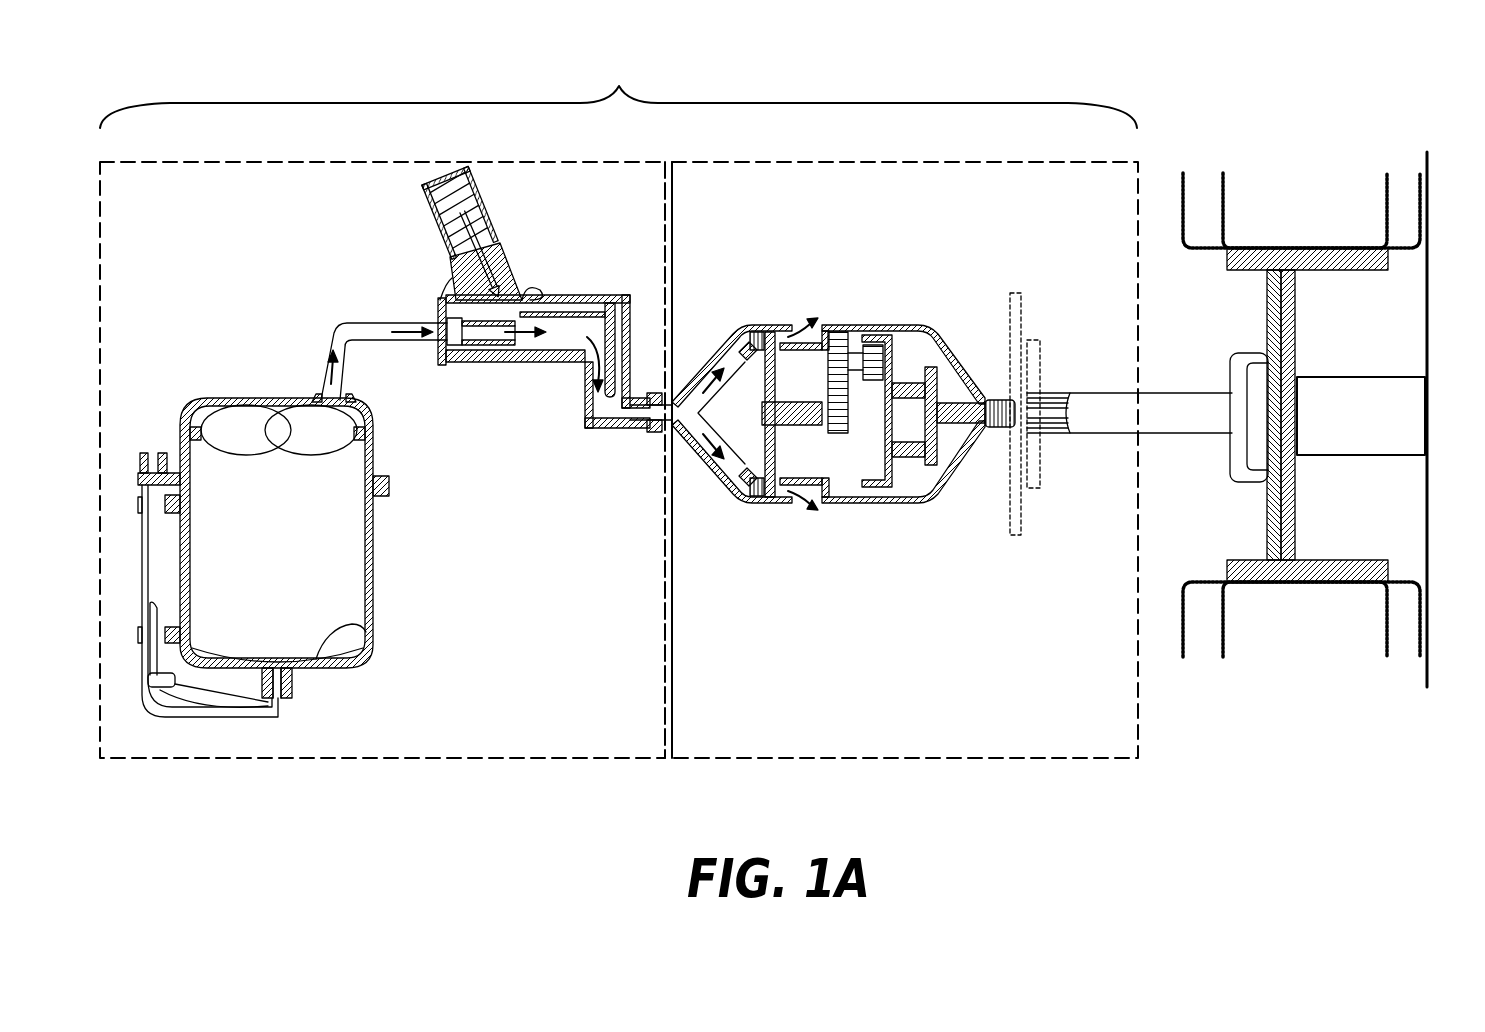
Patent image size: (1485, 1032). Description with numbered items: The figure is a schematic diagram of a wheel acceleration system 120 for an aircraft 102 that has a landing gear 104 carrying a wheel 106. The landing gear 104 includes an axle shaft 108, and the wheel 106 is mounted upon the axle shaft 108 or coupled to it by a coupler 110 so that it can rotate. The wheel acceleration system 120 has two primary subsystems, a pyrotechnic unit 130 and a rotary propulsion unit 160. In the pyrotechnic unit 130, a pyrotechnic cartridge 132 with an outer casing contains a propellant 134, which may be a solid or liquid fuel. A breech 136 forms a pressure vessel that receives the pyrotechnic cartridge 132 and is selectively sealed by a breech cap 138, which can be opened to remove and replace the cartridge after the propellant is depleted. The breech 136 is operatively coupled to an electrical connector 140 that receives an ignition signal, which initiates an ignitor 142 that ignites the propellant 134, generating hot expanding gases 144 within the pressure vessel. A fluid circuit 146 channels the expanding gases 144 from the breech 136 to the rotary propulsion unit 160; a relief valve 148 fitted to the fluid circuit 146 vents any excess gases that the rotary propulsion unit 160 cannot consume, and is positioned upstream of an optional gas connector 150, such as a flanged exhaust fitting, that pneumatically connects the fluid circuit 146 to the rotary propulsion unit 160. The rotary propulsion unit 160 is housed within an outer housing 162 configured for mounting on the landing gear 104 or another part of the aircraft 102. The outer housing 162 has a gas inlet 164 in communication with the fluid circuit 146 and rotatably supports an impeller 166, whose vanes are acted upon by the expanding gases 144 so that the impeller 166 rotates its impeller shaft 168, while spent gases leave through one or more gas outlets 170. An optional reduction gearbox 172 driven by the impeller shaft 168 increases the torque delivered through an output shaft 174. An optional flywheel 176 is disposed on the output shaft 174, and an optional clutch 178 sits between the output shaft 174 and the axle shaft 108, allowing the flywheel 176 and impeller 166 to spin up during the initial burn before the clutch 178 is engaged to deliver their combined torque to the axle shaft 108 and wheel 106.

The aircraft 102 is at (1428, 172).
The landing gear 104 is at (1380, 423).
The wheel 106 is at (1225, 178).
The axle shaft 108 is at (1195, 435).
The coupler 110 is at (1248, 355).
The wheel acceleration system 120 is at (808, 78).
The pyrotechnic unit 130 is at (528, 153).
The pyrotechnic cartridge 132 is at (366, 630).
The propellant 134 is at (296, 550).
The breech 136 is at (374, 540).
The breech cap 138 is at (262, 395).
The electrical connector 140 is at (142, 452).
The ignitor 142 is at (285, 700).
The expanding gases 144 is at (296, 441).
The fluid circuit 146 is at (340, 324).
The relief valve 148 is at (498, 192).
The gas connector 150 is at (650, 438).
The rotary propulsion unit 160 is at (1072, 153).
The outer housing 162 is at (737, 333).
The gas inlet 164 is at (685, 418).
The impeller 166 is at (760, 482).
The impeller shaft 168 is at (820, 425).
The gas outlet 170 is at (808, 326).
The reduction gearbox 172 is at (842, 333).
The output shaft 174 is at (1000, 432).
The flywheel 176 is at (1012, 318).
The clutch 178 is at (1038, 338).